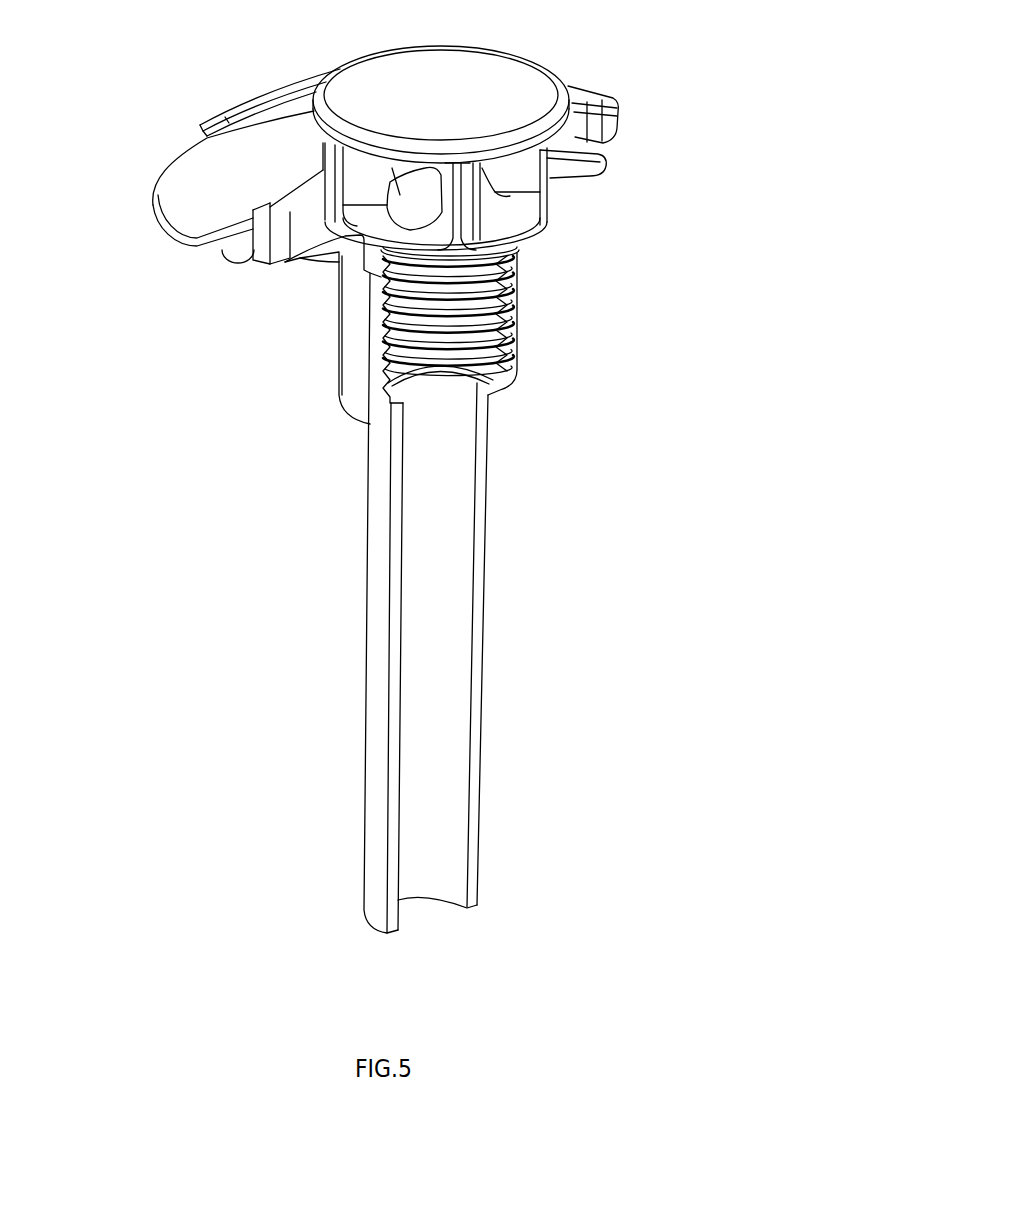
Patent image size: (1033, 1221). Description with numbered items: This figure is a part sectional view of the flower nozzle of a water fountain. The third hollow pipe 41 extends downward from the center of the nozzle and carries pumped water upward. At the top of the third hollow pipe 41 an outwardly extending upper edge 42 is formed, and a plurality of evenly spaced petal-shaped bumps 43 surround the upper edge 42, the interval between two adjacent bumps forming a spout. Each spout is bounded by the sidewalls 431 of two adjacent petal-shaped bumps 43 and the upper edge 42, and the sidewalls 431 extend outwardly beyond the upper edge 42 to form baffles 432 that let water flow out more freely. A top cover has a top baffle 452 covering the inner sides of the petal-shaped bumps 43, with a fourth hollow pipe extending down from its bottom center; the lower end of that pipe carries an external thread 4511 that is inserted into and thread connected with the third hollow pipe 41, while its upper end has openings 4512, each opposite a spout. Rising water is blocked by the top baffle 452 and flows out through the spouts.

The third hollow pipe 41 is at (475, 538).
The upper edge 42 is at (308, 257).
The petal-shaped bump 43 is at (220, 192).
The sidewall 431 is at (292, 210).
The baffle 432 is at (238, 252).
The external thread 4511 is at (503, 275).
The opening 4512 is at (487, 205).
The top baffle 452 is at (500, 95).